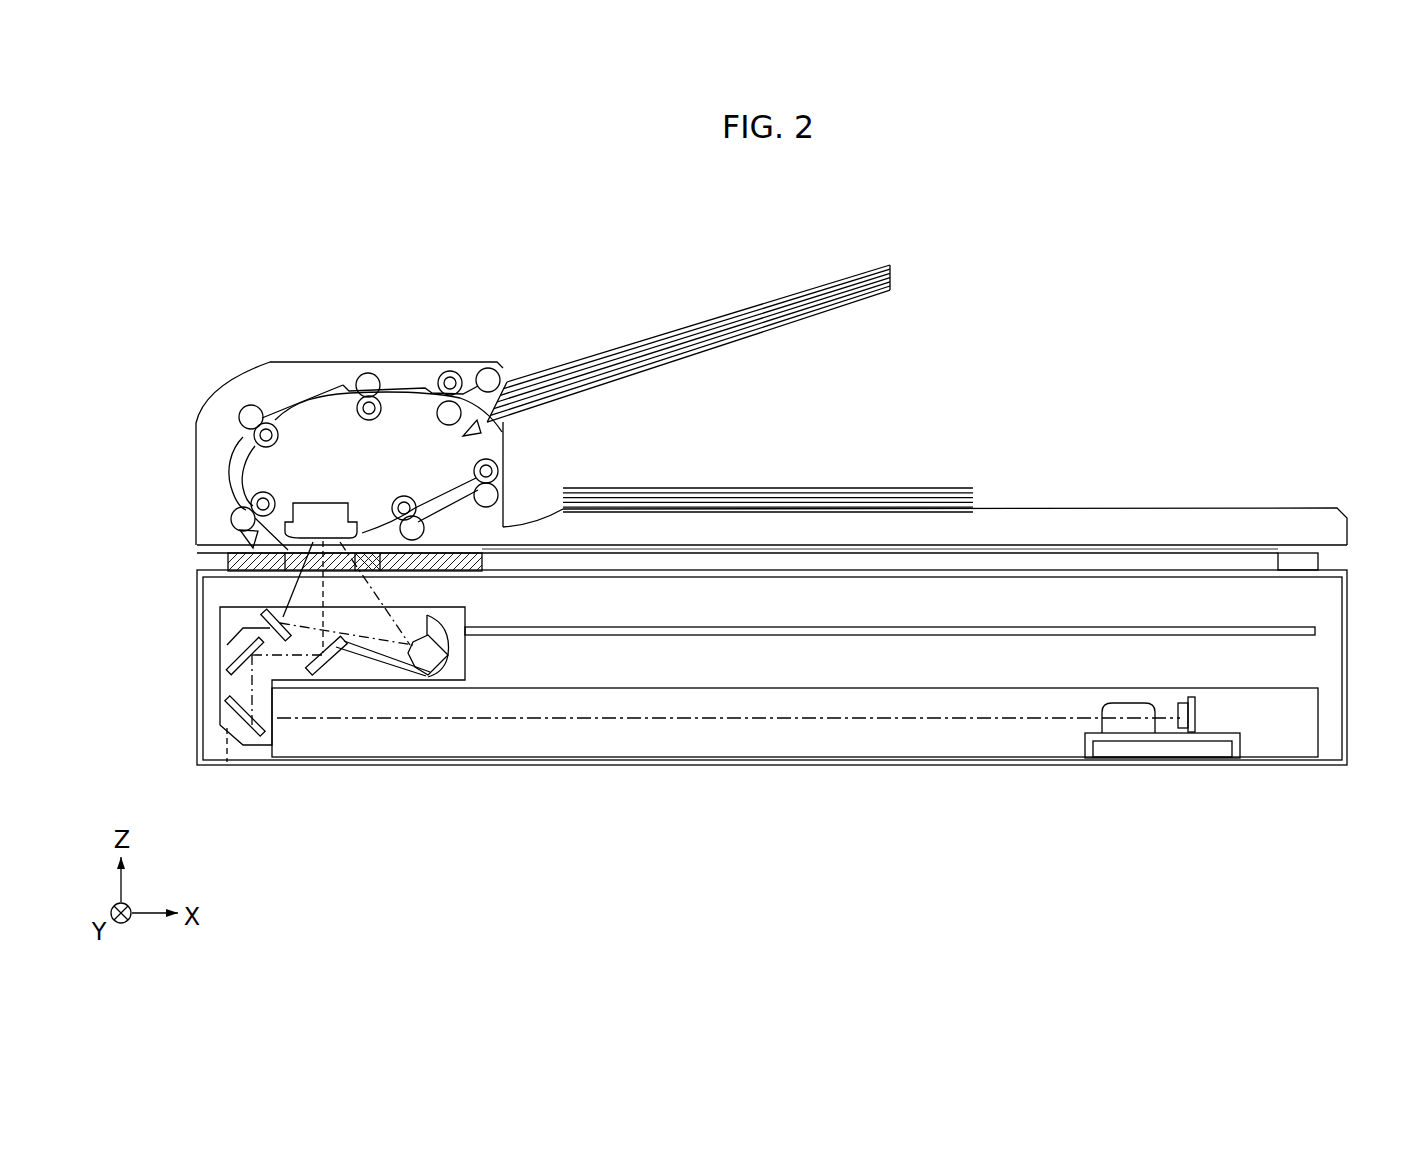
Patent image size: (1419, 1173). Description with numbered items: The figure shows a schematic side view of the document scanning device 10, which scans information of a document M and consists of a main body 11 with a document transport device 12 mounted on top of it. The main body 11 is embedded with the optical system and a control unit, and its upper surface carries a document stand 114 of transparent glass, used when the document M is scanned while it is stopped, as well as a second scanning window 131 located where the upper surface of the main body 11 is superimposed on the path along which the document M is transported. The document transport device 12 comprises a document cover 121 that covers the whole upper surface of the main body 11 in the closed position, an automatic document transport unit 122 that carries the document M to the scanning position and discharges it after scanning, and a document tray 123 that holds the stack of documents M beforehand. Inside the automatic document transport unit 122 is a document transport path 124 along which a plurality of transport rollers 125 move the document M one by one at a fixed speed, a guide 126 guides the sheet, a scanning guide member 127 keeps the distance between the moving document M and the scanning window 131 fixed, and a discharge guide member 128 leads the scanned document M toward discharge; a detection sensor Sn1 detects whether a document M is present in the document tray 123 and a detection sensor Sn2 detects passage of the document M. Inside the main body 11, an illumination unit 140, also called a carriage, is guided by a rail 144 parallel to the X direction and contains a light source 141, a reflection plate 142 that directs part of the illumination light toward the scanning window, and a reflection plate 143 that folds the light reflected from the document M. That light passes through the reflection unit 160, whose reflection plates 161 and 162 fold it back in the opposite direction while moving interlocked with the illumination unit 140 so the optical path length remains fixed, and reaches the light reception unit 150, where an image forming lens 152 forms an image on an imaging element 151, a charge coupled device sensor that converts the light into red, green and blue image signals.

The document scanning device 10 is at (1128, 243).
The main body 11 is at (1348, 707).
The document transport device 12 is at (200, 339).
The document stand 114 is at (1035, 554).
The document cover 121 is at (1273, 507).
The automatic document transport unit 122 is at (206, 402).
The document tray 123 is at (865, 305).
The document transport path 124 is at (221, 461).
The transport rollers 125 is at (246, 407).
The guide 126 is at (310, 393).
The scanning guide member 127 is at (333, 502).
The discharge guide member 128 is at (377, 573).
The scanning window 131 is at (290, 574).
The illumination unit 140 is at (483, 618).
The light source 141 is at (431, 656).
The reflection plate 142 is at (263, 620).
The reflection plate 143 is at (330, 663).
The rail 144 is at (833, 628).
The light reception unit 150 is at (1255, 736).
The imaging element 151 is at (1183, 729).
The image forming lens 152 is at (1118, 731).
The reflection unit 160 is at (214, 738).
The reflection plate 161 is at (232, 662).
The reflection plate 162 is at (230, 715).
The document M is at (687, 326).
The detection sensor Sn1 is at (482, 432).
The detection sensor Sn2 is at (240, 538).